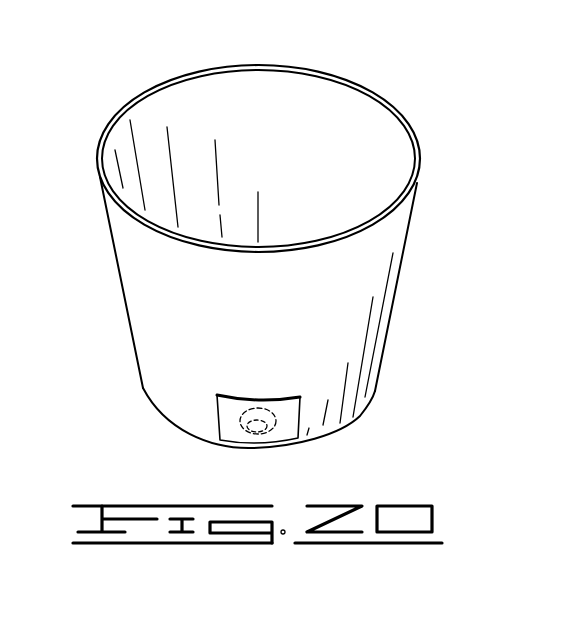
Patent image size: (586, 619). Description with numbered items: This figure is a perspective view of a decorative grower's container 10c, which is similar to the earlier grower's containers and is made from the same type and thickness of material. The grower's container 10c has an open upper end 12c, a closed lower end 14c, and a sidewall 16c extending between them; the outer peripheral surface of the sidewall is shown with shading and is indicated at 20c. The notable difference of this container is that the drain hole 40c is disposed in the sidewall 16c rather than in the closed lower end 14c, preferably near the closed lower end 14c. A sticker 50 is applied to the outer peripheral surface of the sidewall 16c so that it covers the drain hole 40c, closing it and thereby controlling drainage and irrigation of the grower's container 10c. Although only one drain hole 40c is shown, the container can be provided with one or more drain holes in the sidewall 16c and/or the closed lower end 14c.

The grower's container 10c is at (150, 57).
The open upper end 12c is at (263, 65).
The closed lower end 14c is at (347, 428).
The sidewall 16c is at (392, 313).
The outer surface 20c is at (350, 267).
The sticker 50 is at (220, 411).
The drain hole 40c is at (259, 434).